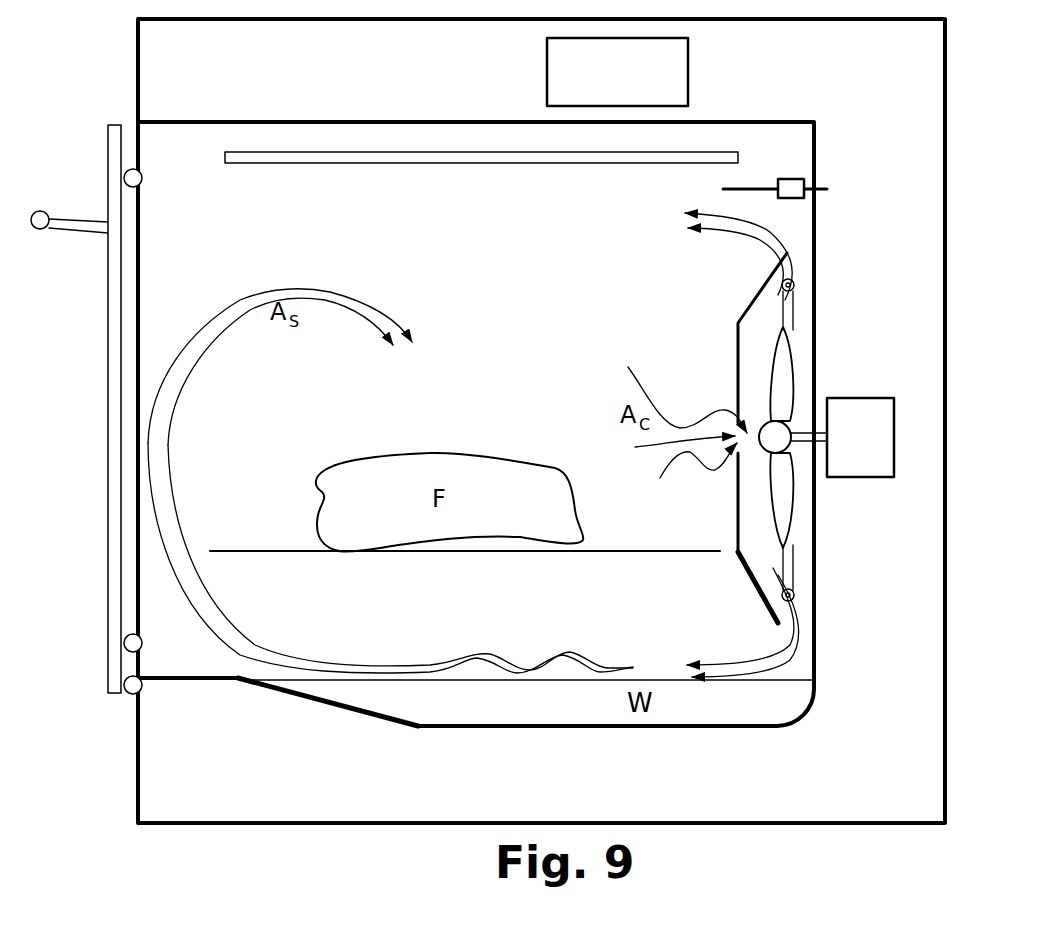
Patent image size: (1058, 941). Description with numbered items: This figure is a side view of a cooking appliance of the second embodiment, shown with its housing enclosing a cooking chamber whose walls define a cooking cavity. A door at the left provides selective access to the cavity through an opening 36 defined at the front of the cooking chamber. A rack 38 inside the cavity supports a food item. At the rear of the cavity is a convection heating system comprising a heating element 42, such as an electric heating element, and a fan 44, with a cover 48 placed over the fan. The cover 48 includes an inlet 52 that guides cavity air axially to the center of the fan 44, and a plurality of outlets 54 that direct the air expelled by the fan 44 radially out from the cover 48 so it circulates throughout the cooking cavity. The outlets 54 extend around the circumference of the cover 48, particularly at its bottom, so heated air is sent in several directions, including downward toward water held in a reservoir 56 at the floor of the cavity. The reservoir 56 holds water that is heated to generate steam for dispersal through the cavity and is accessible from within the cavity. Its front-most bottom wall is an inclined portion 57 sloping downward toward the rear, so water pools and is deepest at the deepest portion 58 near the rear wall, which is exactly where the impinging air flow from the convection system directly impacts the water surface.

The opening 36 is at (108, 442).
The rack 38 is at (465, 553).
The heating element 42 is at (796, 440).
The fan 44 is at (783, 388).
The cover 48 is at (748, 578).
The inlet 52 is at (745, 433).
The outlets 54 is at (800, 255).
The reservoir 56 is at (481, 715).
The inclined portion 57 is at (333, 707).
The deepest portion 58 is at (477, 728).